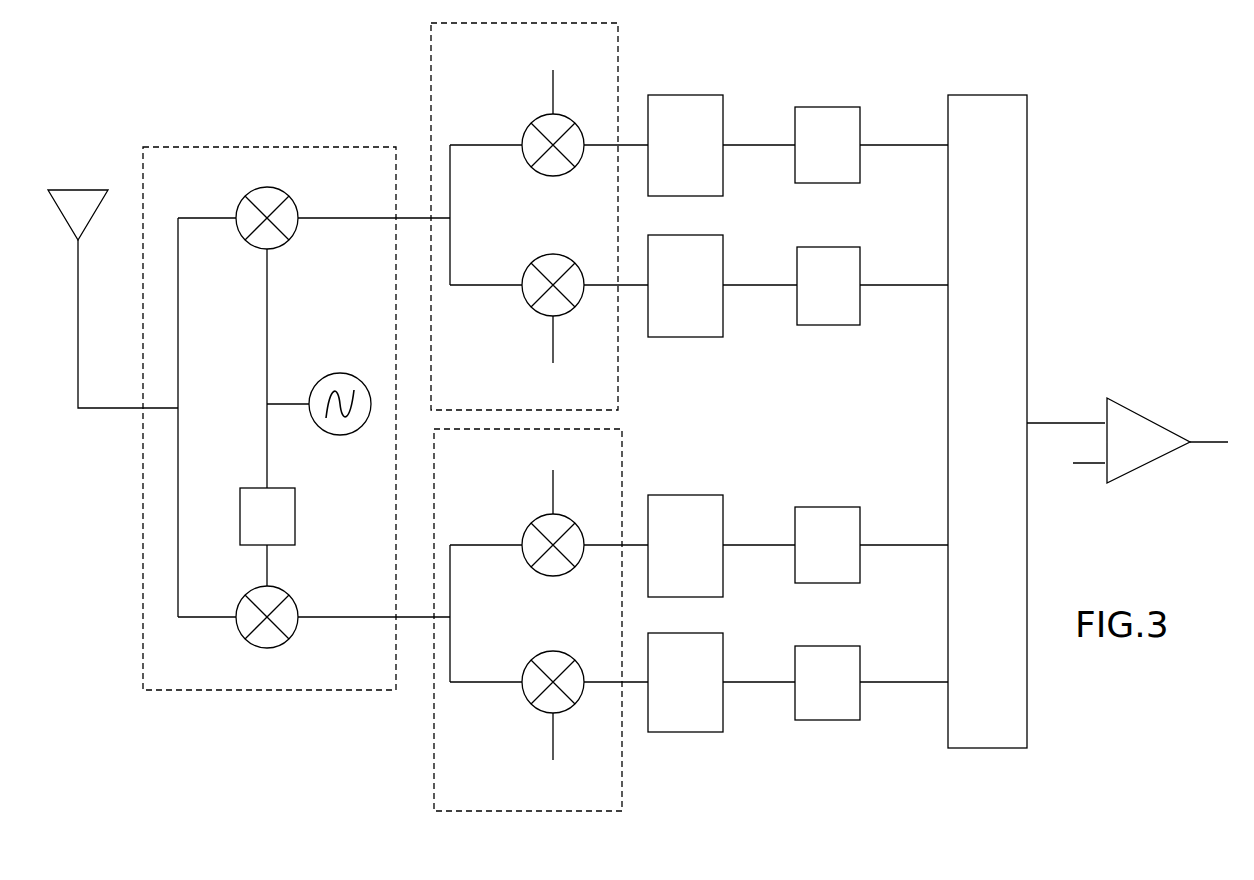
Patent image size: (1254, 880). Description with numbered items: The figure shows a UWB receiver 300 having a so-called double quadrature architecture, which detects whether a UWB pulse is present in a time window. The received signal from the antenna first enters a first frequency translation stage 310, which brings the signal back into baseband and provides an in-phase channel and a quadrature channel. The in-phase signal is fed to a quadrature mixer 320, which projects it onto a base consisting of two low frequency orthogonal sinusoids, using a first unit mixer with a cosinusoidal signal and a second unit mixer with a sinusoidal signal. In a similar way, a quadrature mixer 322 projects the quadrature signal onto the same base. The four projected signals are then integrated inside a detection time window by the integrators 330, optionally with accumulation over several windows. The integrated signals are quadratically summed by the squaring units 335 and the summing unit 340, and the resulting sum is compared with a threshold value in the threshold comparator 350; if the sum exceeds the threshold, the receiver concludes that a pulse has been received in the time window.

The UWB receiver 300 is at (130, 112).
The first frequency translation stage 310 is at (235, 148).
The quadrature mixer 320 is at (429, 80).
The quadrature mixer 322 is at (434, 772).
The integrators 330 is at (676, 95).
The squaring units 335 is at (822, 107).
The summing unit 340 is at (980, 95).
The threshold comparator 350 is at (1122, 400).